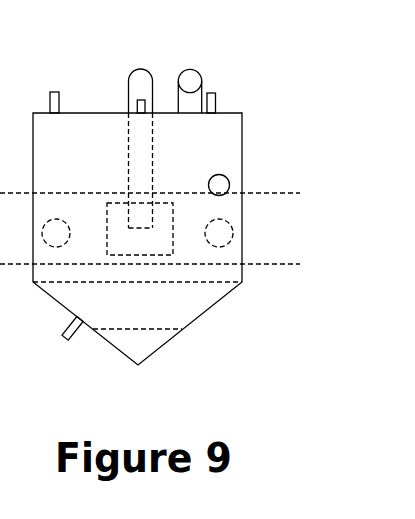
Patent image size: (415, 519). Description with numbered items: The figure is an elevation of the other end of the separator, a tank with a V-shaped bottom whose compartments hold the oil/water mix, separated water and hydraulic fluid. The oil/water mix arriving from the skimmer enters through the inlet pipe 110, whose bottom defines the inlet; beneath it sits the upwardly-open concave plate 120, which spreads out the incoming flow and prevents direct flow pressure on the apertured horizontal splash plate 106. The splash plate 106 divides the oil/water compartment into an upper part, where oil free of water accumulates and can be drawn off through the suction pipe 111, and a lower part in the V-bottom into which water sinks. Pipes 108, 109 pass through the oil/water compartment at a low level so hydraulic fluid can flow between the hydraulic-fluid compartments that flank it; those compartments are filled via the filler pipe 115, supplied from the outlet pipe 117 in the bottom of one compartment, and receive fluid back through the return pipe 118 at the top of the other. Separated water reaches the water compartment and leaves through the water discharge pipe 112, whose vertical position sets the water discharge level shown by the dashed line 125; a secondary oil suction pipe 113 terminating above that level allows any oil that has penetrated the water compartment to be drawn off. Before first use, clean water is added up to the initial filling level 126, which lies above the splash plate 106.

The splash plate 106 is at (137, 282).
The pipe 108 is at (58, 227).
The pipe 109 is at (213, 223).
The inlet pipe 110 is at (130, 80).
The suction pipe 111 is at (185, 83).
The water discharge pipe 112 is at (230, 185).
The secondary oil suction pipe 113 is at (138, 102).
The filler pipe 115 is at (213, 98).
The outlet pipe 117 is at (67, 330).
The return pipe 118 is at (53, 92).
The plate 120 is at (115, 202).
The dashed line 125 is at (169, 194).
The initial filling level 126 is at (169, 264).